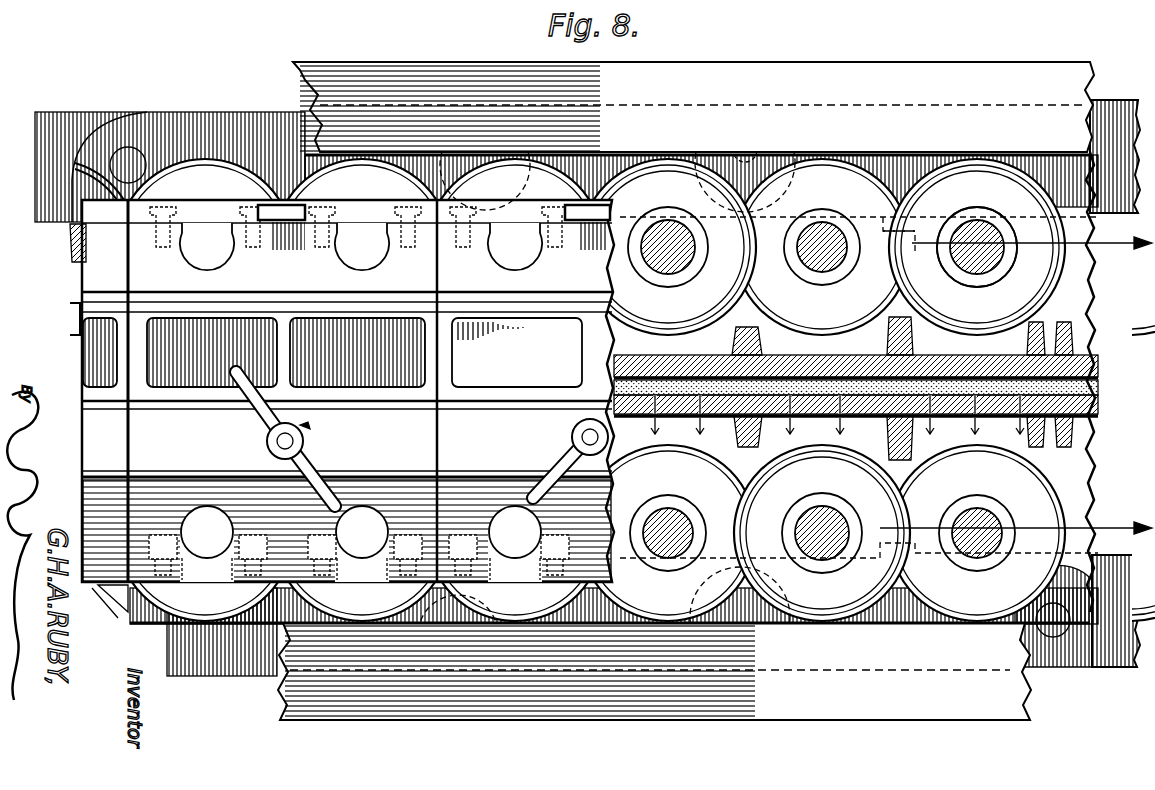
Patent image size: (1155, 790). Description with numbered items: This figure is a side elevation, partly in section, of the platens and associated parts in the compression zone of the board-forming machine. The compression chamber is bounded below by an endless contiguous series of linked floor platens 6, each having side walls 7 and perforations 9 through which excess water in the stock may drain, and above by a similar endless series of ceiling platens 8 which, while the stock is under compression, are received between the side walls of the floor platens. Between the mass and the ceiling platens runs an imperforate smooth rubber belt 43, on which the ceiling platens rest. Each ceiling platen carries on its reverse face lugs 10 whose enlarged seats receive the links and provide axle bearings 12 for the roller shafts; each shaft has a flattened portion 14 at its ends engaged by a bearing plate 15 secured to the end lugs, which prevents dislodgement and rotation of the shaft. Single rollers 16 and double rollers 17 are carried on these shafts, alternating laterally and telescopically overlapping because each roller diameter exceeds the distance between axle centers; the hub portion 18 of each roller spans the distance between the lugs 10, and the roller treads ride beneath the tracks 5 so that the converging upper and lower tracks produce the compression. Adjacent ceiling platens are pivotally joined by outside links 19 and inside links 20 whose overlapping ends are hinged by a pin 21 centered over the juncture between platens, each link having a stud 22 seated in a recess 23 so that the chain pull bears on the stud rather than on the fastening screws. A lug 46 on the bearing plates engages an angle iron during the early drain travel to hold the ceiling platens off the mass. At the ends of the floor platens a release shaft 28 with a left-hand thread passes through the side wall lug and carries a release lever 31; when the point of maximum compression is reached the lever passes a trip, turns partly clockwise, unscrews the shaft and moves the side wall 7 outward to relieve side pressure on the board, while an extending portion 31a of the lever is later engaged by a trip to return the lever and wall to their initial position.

The tracks 5 is at (890, 62).
The floor platens 6 is at (1098, 437).
The side wall 7 is at (382, 412).
The ceiling platens 8 is at (856, 388).
The perforations 9 is at (1098, 402).
The lugs 10 is at (992, 444).
The axle bearings 12 is at (410, 520).
The flattened portion 14 is at (220, 238).
The bearing plate 15 is at (339, 390).
The single rollers 16 is at (625, 402).
The double rollers 17 is at (50, 318).
The hub portion 18 is at (1000, 264).
The outside links 19 is at (214, 122).
The inside links 20 is at (55, 118).
The pin 21 is at (125, 160).
The stud 22 is at (886, 368).
The recess 23 is at (916, 250).
The release shaft 28 is at (276, 444).
The release lever 31 is at (320, 470).
The extending portion 31a is at (262, 402).
The rubber belt 43 is at (1096, 378).
The lug 46 is at (286, 236).